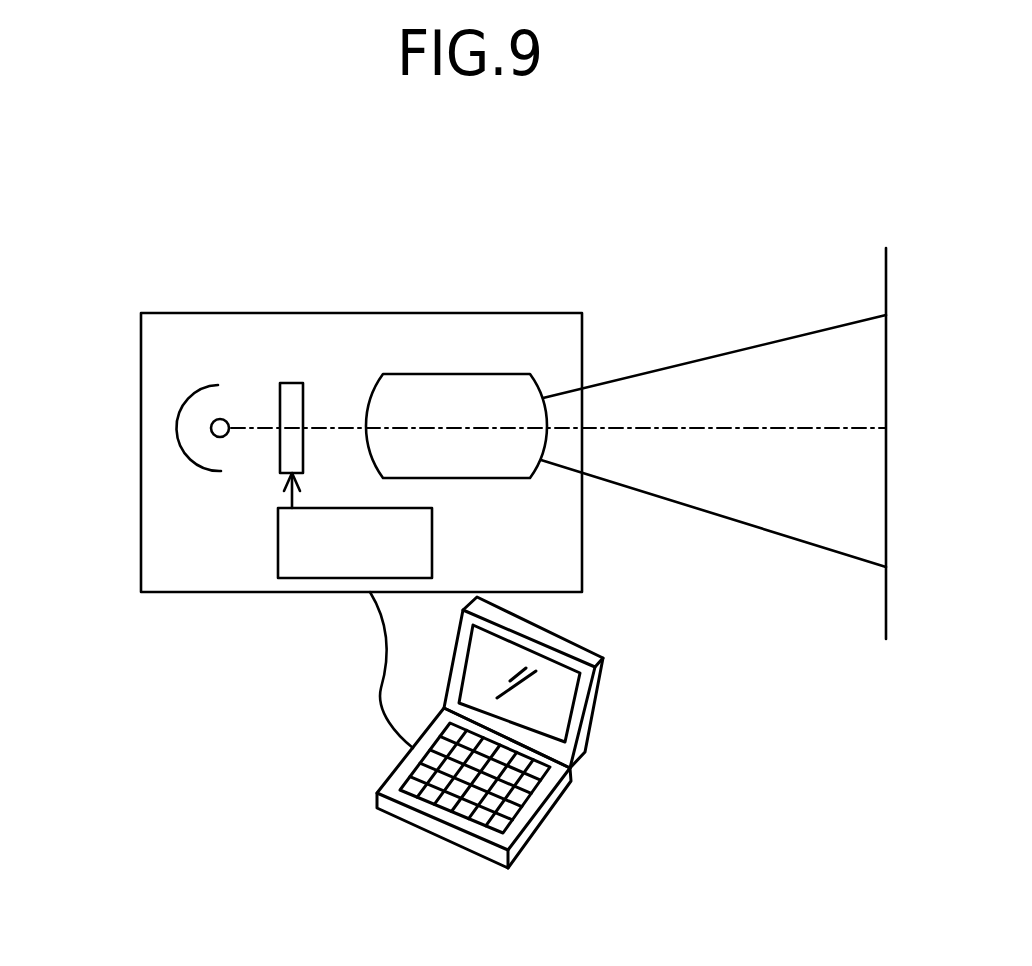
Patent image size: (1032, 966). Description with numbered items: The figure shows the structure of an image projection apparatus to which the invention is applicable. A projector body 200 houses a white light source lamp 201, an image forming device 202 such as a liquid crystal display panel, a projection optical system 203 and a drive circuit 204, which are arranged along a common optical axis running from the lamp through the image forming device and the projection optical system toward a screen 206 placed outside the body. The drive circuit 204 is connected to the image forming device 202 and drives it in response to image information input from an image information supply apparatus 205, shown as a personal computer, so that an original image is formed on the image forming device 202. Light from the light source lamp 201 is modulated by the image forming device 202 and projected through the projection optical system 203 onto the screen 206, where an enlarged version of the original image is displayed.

The projector body 200 is at (228, 313).
The white light source lamp 201 is at (187, 463).
The image forming device 202 is at (292, 383).
The projection optical system 203 is at (455, 380).
The drive circuit 204 is at (305, 568).
The image information supply apparatus 205 is at (543, 813).
The screen 206 is at (886, 612).